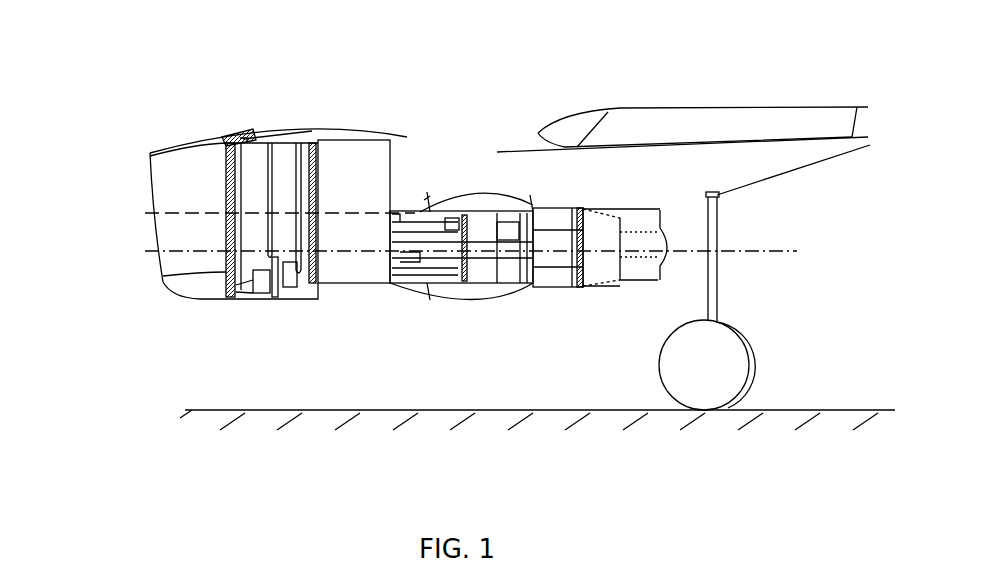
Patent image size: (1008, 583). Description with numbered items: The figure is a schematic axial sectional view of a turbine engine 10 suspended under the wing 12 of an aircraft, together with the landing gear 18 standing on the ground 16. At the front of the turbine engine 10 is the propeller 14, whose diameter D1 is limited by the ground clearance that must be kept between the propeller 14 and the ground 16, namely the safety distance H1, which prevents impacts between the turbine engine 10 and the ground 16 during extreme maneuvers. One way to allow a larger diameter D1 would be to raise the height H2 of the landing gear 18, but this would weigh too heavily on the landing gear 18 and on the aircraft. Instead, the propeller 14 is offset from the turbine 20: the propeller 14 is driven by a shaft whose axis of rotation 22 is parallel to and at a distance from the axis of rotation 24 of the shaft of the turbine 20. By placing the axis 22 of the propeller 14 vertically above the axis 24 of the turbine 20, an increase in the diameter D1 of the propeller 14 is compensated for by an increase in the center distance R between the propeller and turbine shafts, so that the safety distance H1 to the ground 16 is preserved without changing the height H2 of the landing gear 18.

The turbine engine 10 is at (376, 76).
The wing 12 is at (700, 96).
The propeller 14 is at (228, 300).
The ground 16 is at (187, 408).
The landing gear 18 is at (680, 372).
The turbine 20 is at (530, 285).
The axis of rotation 22 is at (183, 213).
The axis of rotation 24 is at (546, 246).
The center distance R is at (215, 252).
The diameter D1 is at (163, 283).
The safety distance H1 is at (302, 314).
The height H2 is at (808, 192).